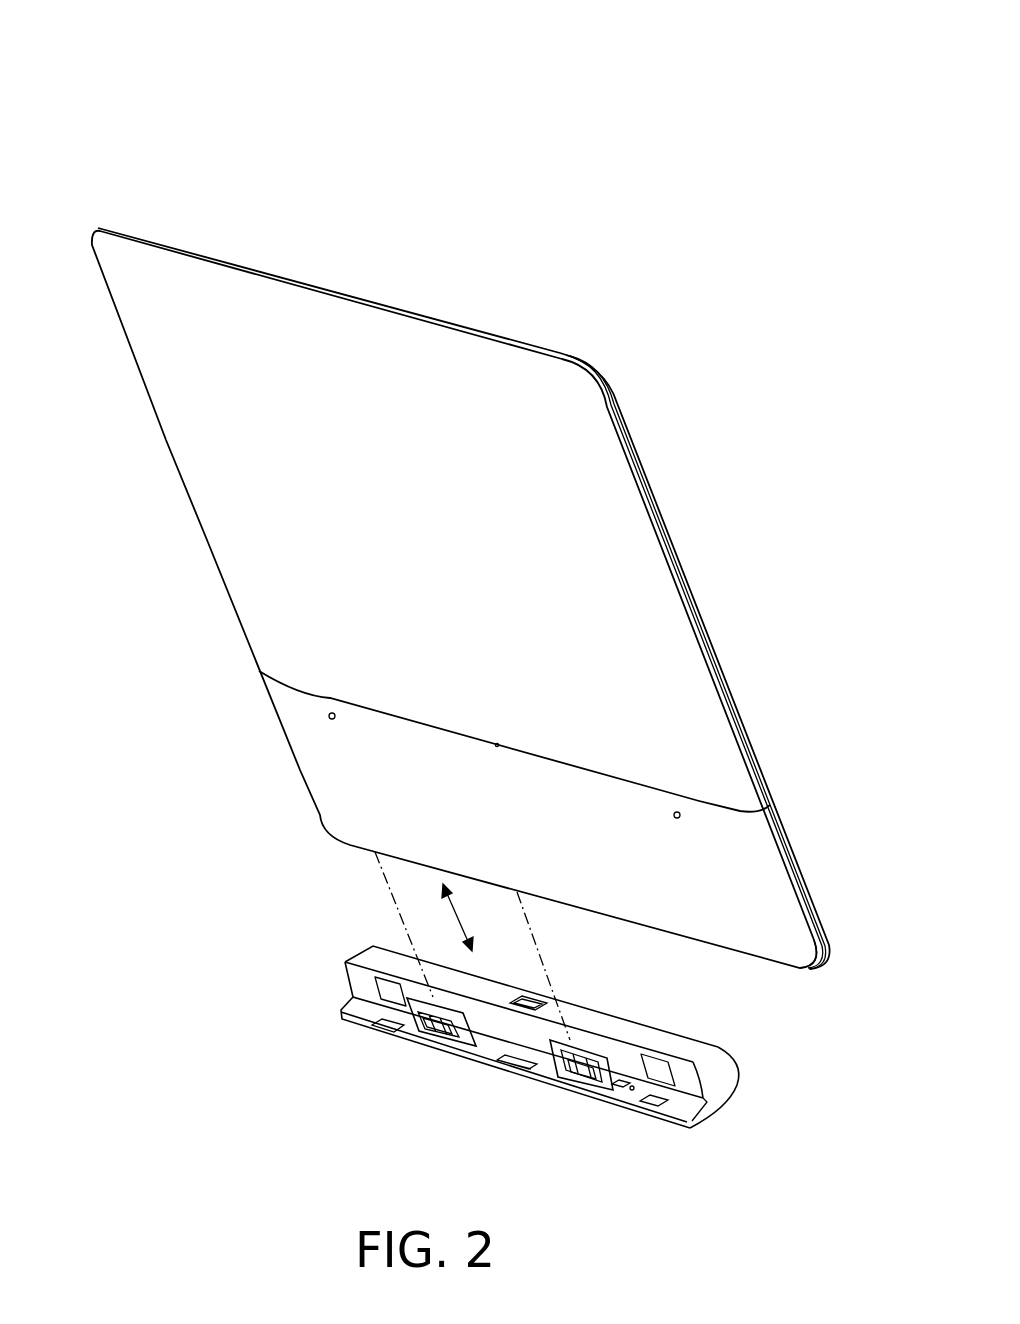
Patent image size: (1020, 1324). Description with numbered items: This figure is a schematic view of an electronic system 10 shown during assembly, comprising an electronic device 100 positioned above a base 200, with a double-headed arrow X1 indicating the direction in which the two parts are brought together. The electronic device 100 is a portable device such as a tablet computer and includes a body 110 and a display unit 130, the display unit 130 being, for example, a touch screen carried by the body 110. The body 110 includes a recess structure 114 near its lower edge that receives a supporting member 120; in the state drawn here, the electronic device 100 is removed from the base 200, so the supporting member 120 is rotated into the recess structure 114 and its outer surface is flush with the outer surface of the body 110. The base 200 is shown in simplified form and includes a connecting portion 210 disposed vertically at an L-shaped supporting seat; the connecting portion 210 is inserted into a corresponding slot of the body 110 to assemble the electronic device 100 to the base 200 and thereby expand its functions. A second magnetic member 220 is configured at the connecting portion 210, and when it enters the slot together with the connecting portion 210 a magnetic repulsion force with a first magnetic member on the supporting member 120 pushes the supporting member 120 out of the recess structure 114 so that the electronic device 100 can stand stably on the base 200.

The electronic system 10 is at (794, 27).
The electronic device 100 is at (759, 104).
The body 110 is at (625, 588).
The supporting member 120 is at (718, 978).
The display unit 130 is at (464, 569).
The recess structure 114 is at (814, 912).
The base 200 is at (720, 1112).
The connecting portion 210 is at (580, 1078).
The second magnetic member 220 is at (563, 1048).
The assembly direction X1 is at (453, 912).